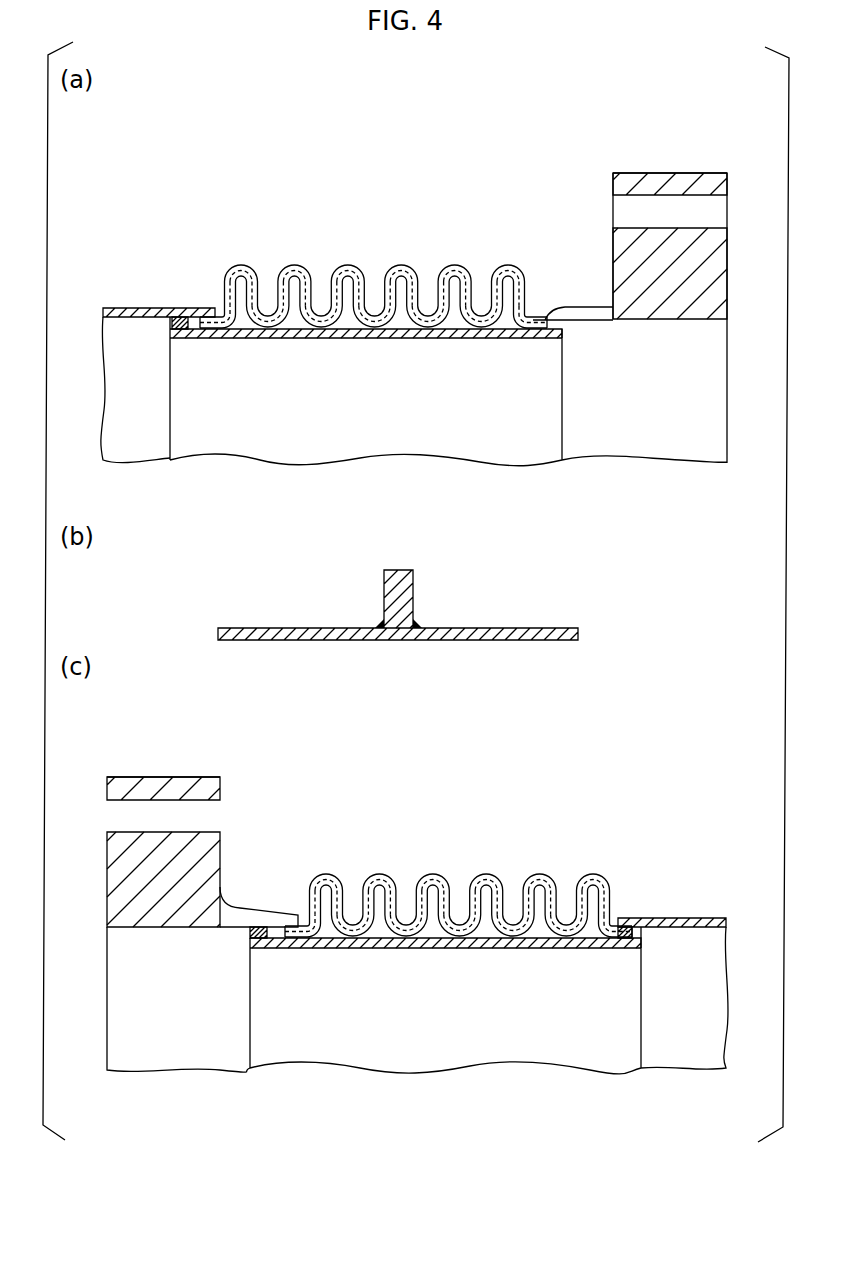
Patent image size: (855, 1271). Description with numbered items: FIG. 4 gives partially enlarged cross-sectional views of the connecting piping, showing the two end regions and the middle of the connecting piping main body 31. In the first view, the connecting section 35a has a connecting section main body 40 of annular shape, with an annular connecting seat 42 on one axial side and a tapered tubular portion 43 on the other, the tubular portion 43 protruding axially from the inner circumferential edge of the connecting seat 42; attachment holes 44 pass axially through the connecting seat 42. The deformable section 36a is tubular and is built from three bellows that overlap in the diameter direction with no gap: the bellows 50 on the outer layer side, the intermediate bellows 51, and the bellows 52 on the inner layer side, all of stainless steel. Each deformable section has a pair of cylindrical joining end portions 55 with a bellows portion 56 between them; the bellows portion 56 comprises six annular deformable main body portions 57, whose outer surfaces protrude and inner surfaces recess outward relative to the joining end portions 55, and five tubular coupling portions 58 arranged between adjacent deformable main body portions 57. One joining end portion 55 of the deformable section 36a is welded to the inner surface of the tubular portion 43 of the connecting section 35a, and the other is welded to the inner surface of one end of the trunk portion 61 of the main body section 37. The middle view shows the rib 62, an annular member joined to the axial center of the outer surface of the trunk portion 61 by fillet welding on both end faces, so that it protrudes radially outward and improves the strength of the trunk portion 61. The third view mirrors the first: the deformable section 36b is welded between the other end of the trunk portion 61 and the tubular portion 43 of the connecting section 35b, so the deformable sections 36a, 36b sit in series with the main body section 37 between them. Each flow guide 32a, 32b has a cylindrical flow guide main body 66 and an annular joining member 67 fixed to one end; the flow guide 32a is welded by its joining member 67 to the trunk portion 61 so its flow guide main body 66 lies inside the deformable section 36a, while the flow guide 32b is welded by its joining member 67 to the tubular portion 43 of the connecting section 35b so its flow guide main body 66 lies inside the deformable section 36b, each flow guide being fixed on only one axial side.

The connecting piping main body 31 is at (735, 148).
The flow guide 32a is at (572, 420).
The flow guide 32b is at (652, 1010).
The connecting section 35a is at (672, 165).
The connecting section 35b is at (163, 770).
The deformable section 36a is at (348, 258).
The deformable section 36b is at (431, 866).
The main body section 37 is at (111, 300).
The connecting section main body 40 is at (712, 240).
The connecting seat 42 is at (706, 276).
The tubular portion 43 is at (587, 312).
The attachment holes 44 is at (685, 195).
The bellows 50 is at (241, 266).
The intermediate bellows 51 is at (293, 266).
The bellows 52 is at (263, 333).
The joining end portion 55 is at (212, 320).
The bellows portion 56 is at (510, 266).
The deformable main body portion 57 is at (401, 266).
The coupling portion 58 is at (375, 330).
The trunk portion 61 is at (151, 308).
The rib 62 is at (408, 582).
The flow guide main body 66 is at (234, 340).
The joining member 67 is at (183, 320).